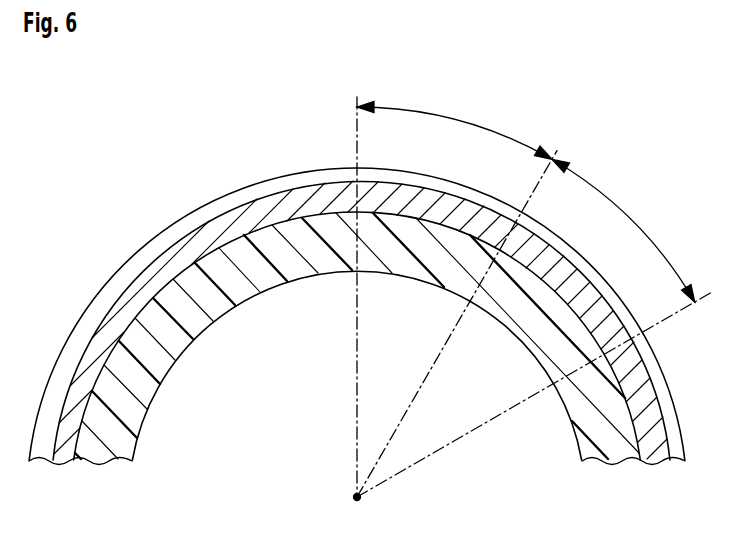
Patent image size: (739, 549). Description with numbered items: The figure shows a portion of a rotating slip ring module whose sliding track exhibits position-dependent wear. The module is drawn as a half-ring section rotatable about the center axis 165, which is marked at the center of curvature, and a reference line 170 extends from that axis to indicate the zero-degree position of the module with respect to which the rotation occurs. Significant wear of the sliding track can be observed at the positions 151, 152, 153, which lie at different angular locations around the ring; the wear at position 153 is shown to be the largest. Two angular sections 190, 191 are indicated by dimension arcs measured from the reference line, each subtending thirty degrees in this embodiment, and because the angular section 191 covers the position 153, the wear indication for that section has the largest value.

The wear position 151 is at (247, 201).
The wear position 152 is at (431, 190).
The wear position 153 is at (563, 244).
The center axis 165 is at (362, 498).
The reference line 170 is at (357, 398).
The angular section 190 is at (457, 289).
The angular section 191 is at (534, 328).